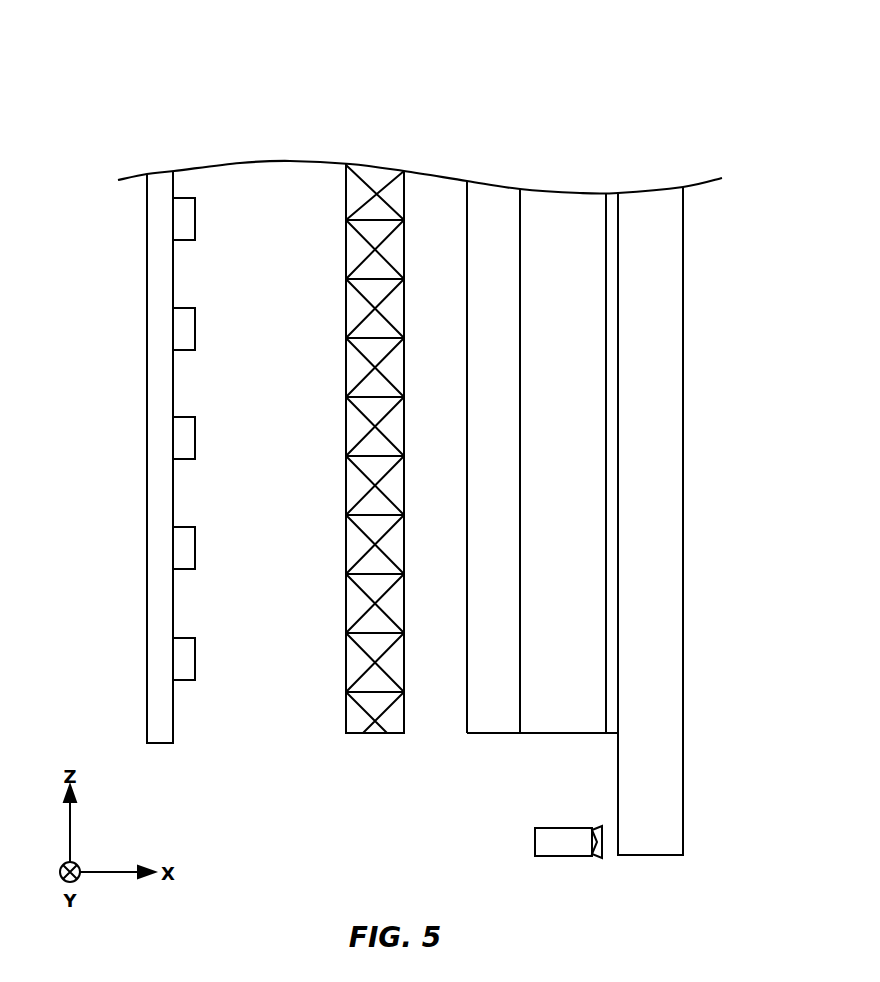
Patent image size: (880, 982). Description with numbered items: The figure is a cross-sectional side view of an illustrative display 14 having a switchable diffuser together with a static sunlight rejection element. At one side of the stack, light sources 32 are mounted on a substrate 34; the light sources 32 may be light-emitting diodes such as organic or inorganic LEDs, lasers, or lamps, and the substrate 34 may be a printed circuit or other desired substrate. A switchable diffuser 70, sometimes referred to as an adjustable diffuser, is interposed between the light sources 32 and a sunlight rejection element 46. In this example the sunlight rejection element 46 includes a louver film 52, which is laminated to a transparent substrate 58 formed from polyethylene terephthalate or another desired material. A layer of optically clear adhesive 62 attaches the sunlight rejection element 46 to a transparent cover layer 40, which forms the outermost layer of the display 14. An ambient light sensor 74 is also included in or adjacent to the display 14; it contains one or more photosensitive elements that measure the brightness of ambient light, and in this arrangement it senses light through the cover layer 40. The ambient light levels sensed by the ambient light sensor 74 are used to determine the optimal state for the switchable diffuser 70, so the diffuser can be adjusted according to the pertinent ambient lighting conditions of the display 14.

The display 14 is at (588, 60).
The substrate 34 is at (161, 188).
The light sources 32 is at (190, 219).
The switchable diffuser 70 is at (373, 187).
The sunlight rejection element 46 is at (548, 461).
The louver film 52 is at (467, 177).
The transparent substrate 58 is at (523, 177).
The optically clear adhesive 62 is at (612, 200).
The transparent cover layer 40 is at (672, 768).
The ambient light sensor 74 is at (535, 840).